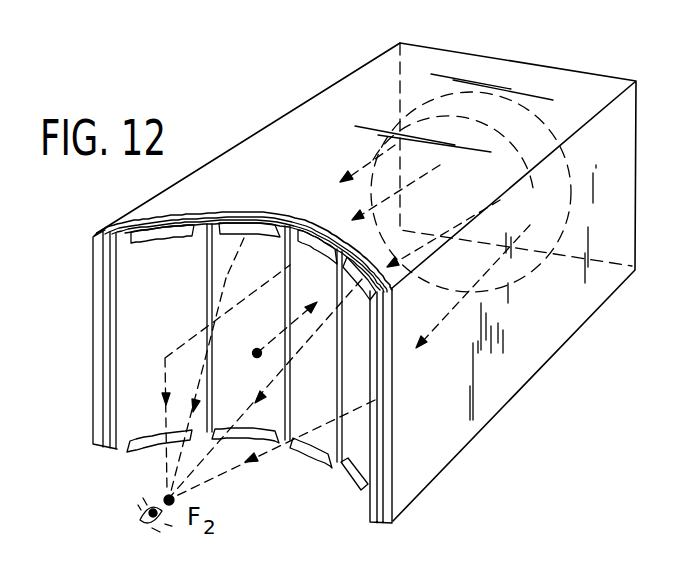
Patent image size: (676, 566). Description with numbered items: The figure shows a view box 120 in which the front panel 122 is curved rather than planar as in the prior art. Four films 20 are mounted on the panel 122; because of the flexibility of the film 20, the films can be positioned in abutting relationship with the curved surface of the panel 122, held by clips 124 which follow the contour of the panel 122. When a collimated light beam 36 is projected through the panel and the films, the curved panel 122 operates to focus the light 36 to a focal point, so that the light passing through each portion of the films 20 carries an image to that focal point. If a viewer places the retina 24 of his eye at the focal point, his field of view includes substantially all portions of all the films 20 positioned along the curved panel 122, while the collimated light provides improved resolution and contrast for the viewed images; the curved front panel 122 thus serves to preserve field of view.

The view box 120 is at (300, 90).
The front panel 122 is at (116, 229).
The clips 124 is at (258, 230).
The films 20 is at (210, 256).
The collimated light beam 36 is at (446, 318).
The retina 24 is at (140, 513).